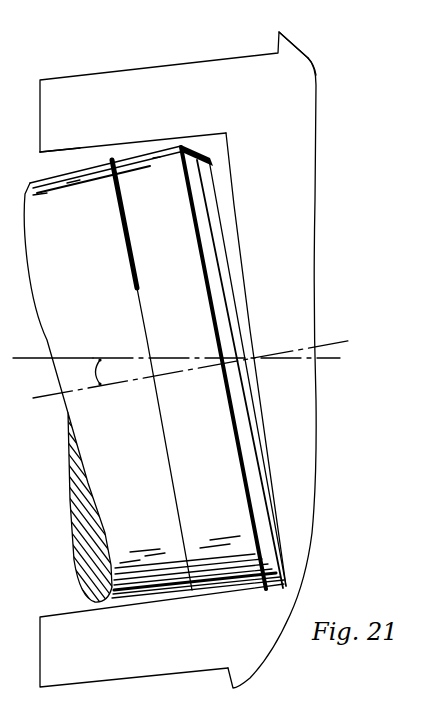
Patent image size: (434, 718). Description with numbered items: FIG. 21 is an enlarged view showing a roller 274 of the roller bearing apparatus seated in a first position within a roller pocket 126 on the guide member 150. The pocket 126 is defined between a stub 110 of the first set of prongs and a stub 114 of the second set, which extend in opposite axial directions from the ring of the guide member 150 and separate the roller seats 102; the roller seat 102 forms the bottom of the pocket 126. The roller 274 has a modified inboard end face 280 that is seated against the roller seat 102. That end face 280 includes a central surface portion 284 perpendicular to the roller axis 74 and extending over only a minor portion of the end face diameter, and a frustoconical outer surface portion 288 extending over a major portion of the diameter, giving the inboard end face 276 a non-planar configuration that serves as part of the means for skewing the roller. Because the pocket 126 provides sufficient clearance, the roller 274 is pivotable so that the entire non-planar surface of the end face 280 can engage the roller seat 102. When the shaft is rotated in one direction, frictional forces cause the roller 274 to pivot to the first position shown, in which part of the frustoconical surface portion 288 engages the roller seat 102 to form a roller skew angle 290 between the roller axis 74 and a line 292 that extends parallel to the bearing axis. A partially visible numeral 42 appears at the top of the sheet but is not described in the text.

The member 42 is at (212, 1).
The roller axis 74 is at (342, 340).
The roller seat 102 is at (234, 146).
The first set of prongs or stubs 110 is at (143, 78).
The second set of prongs or stubs 114 is at (175, 657).
The pocket 126 is at (54, 160).
The guide member 150 is at (318, 55).
The roller 274 is at (76, 557).
The non-planar inboard end face 276 is at (155, 148).
The end face 280 is at (244, 298).
The central surface portion 284 is at (260, 379).
The outer surface portion 288 is at (231, 252).
The roller skew angle 290 is at (100, 384).
The line 292 is at (77, 358).